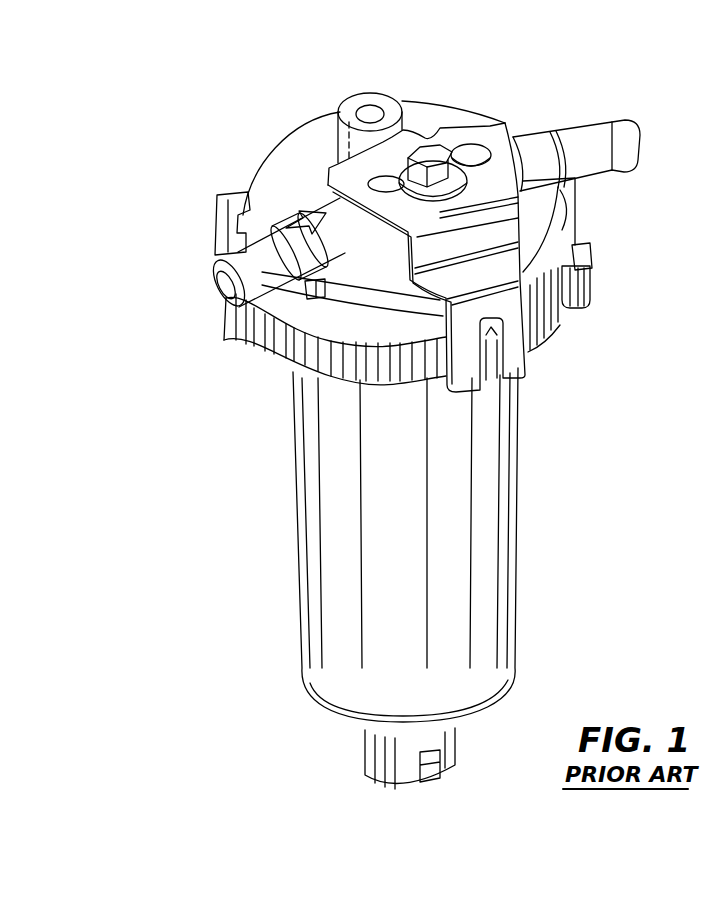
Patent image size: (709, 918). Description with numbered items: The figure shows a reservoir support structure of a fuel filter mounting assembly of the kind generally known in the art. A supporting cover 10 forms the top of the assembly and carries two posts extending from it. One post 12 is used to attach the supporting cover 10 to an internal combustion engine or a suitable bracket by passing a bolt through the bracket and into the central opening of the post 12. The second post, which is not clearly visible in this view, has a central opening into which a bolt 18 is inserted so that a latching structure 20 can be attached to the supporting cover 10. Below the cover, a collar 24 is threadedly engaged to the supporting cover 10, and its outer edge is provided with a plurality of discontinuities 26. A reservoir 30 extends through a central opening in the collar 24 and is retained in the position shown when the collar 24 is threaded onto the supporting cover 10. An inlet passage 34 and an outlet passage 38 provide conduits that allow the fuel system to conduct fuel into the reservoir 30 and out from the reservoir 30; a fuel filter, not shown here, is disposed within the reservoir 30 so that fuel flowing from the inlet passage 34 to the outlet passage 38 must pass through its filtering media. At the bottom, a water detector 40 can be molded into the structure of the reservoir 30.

The supporting cover 10 is at (440, 108).
The post 12 is at (349, 108).
The bolt 18 is at (506, 122).
The latching structure 20 is at (572, 218).
The collar 24 is at (577, 248).
The discontinuities 26 is at (575, 310).
The reservoir 30 is at (505, 539).
The inlet passage 34 is at (222, 263).
The outlet passage 38 is at (582, 135).
The water detector 40 is at (452, 756).